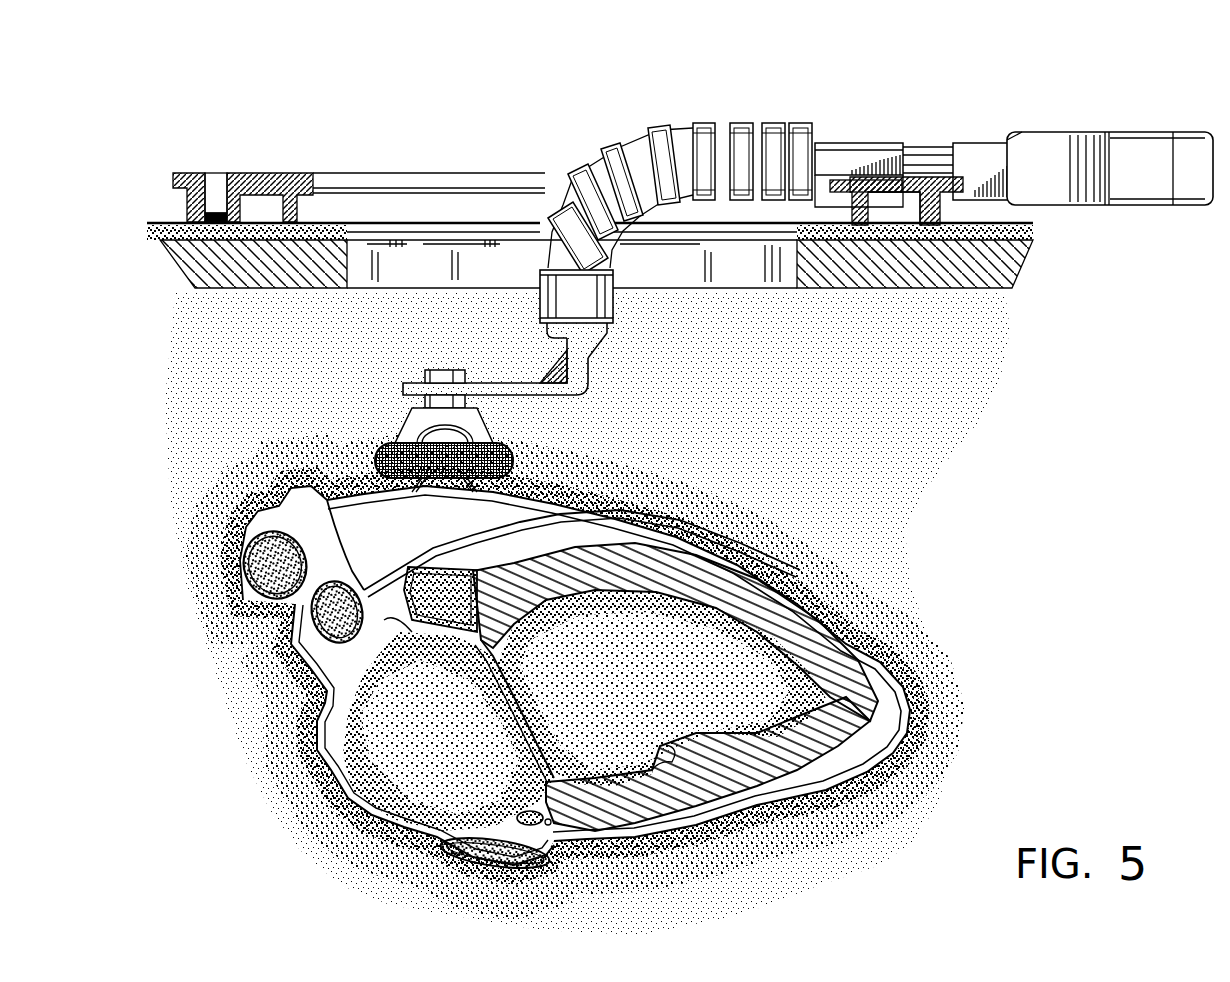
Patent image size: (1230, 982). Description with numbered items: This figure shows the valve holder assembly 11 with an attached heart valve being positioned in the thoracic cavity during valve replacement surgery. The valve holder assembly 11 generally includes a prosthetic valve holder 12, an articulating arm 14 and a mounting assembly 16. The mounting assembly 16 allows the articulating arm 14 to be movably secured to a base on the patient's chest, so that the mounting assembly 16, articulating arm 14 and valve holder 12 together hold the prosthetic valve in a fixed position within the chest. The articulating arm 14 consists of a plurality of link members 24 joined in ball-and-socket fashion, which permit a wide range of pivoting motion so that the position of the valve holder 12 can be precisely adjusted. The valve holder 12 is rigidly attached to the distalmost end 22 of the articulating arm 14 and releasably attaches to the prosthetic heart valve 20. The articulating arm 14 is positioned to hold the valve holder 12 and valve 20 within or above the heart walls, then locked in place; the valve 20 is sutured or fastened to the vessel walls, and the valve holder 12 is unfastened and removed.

The valve holder assembly 11 is at (272, 174).
The prosthetic valve holder 12 is at (540, 397).
The articulating arm 14 is at (651, 130).
The mounting assembly 16 is at (880, 147).
The prosthetic heart valve 20 is at (487, 437).
The distalmost end 22 is at (612, 327).
The link members 24 is at (774, 122).